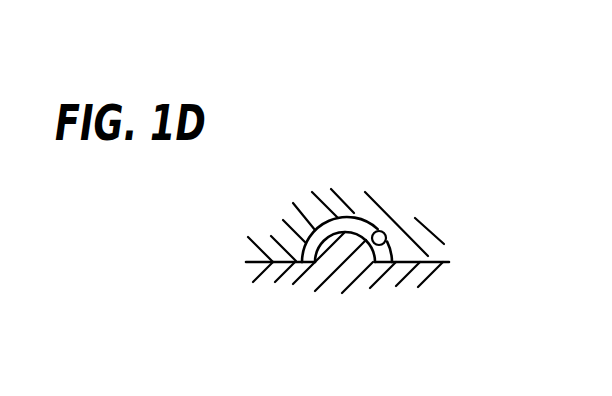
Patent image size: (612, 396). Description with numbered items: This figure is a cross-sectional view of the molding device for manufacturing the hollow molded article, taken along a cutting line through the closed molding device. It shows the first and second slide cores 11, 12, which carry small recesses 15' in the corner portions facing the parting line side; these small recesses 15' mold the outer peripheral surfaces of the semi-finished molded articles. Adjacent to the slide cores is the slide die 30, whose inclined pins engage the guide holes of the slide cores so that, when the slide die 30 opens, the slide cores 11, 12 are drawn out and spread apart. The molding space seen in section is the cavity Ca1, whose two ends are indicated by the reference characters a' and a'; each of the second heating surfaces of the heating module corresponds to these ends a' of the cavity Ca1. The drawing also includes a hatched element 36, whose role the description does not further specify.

The cavity Ca1 is at (321, 224).
The first slide core 11 is at (392, 196).
The second slide core 12 is at (404, 224).
The small recess 15' is at (433, 234).
The protrusion 36 is at (348, 249).
The cavity end a' is at (349, 309).
The slide die 30 is at (438, 278).